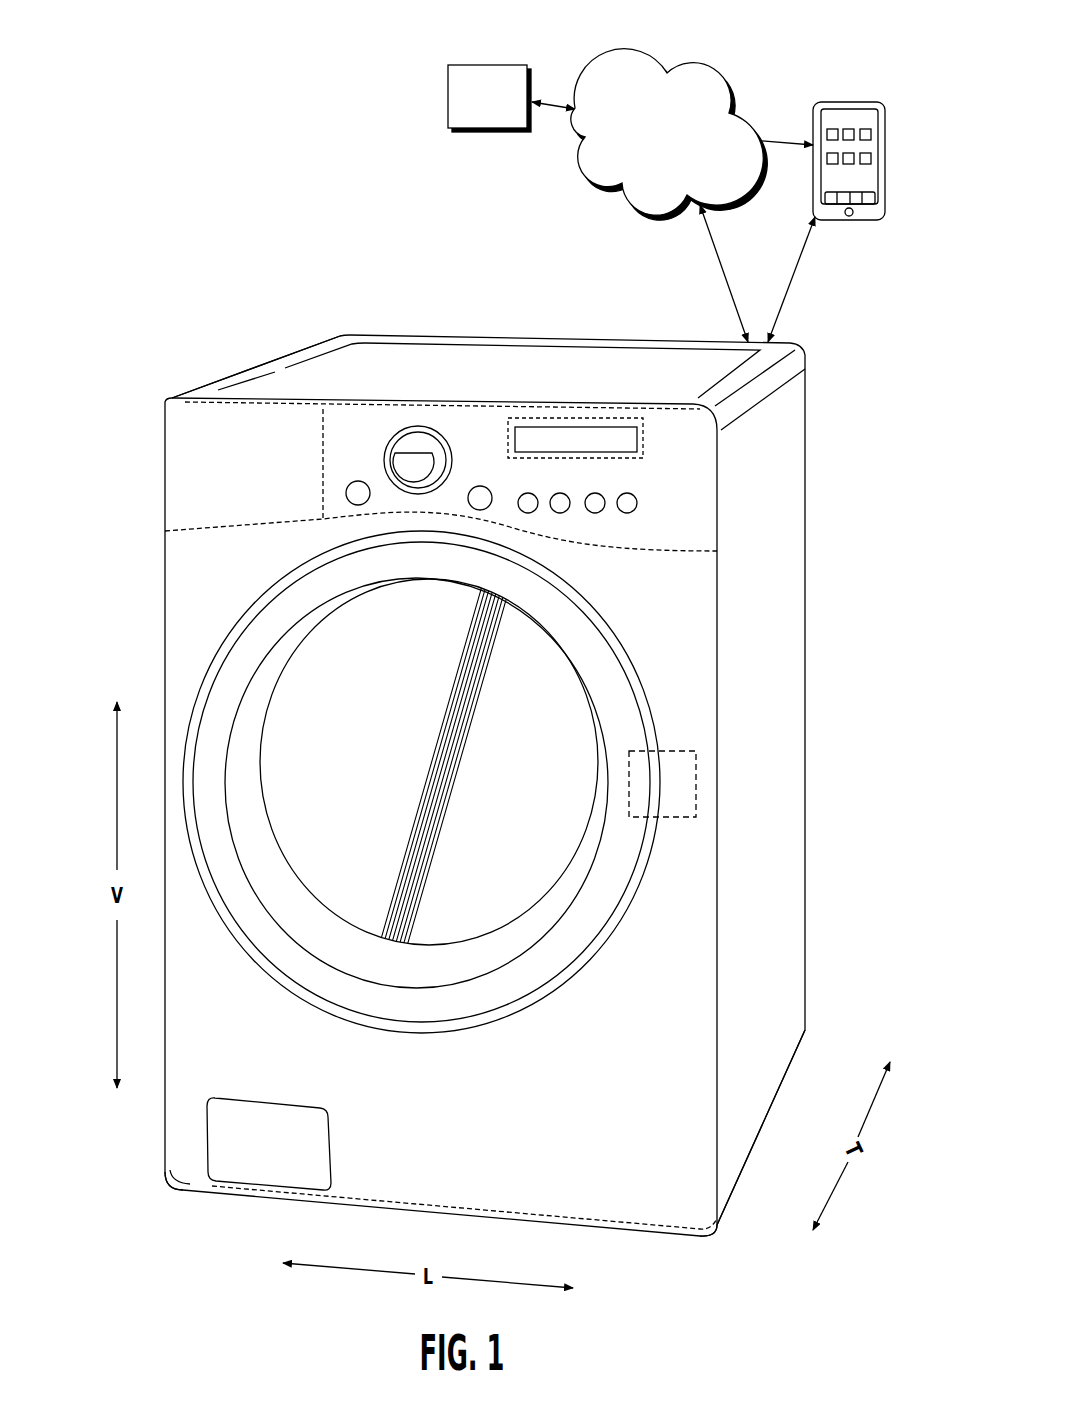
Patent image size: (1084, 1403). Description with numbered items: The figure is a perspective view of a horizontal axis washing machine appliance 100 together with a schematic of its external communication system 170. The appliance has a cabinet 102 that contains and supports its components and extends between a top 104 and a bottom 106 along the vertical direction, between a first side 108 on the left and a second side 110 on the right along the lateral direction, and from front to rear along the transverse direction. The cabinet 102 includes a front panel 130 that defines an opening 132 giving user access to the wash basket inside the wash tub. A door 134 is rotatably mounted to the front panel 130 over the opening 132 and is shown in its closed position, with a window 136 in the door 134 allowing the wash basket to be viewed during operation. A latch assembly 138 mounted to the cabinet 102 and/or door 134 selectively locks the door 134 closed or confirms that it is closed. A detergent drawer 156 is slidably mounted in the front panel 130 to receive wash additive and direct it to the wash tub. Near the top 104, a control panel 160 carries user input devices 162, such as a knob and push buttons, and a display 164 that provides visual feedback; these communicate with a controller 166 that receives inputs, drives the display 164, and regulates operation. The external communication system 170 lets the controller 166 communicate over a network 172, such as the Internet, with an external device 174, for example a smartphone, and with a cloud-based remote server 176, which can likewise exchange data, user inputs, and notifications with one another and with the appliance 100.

The washing machine appliance 100 is at (143, 313).
The cabinet 102 is at (785, 635).
The top 104 is at (823, 345).
The bottom 106 is at (803, 1080).
The first side 108 is at (170, 1197).
The second side 110 is at (715, 1235).
The front panel 130 is at (185, 590).
The opening 132 is at (623, 642).
The door 134 is at (635, 740).
The window 136 is at (340, 718).
The latch assembly 138 is at (696, 786).
The detergent drawer 156 is at (185, 433).
The control panel 160 is at (484, 435).
The user input devices 162 is at (413, 453).
The display 164 is at (587, 437).
The controller 166 is at (567, 418).
The external communication system 170 is at (830, 63).
The network 172 is at (639, 144).
The external device 174 is at (885, 173).
The remote server 176 is at (469, 109).